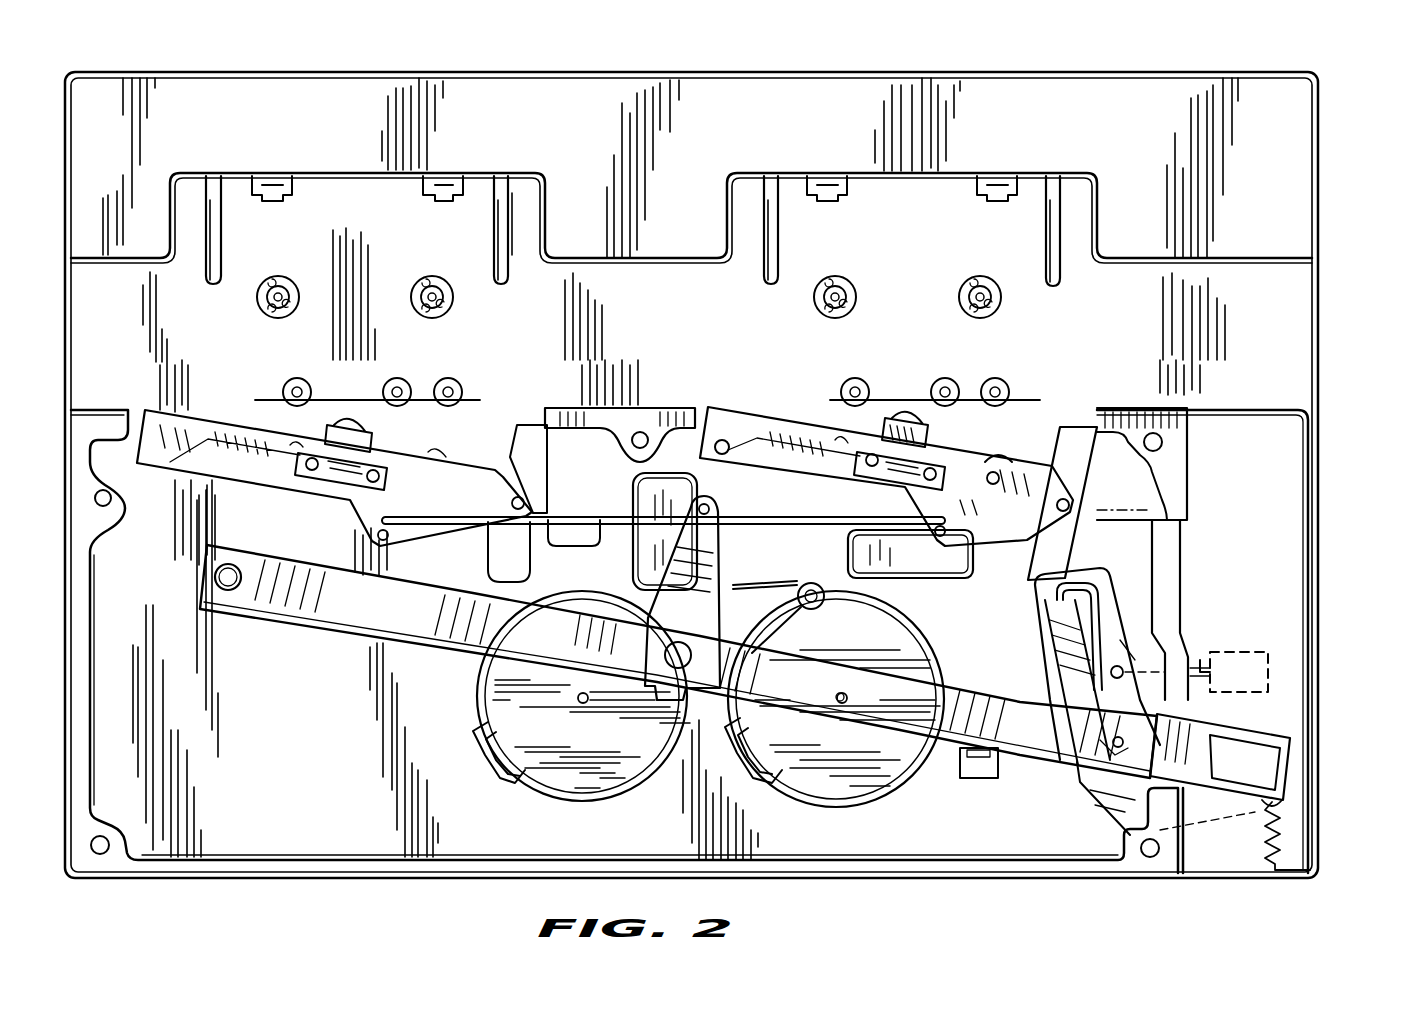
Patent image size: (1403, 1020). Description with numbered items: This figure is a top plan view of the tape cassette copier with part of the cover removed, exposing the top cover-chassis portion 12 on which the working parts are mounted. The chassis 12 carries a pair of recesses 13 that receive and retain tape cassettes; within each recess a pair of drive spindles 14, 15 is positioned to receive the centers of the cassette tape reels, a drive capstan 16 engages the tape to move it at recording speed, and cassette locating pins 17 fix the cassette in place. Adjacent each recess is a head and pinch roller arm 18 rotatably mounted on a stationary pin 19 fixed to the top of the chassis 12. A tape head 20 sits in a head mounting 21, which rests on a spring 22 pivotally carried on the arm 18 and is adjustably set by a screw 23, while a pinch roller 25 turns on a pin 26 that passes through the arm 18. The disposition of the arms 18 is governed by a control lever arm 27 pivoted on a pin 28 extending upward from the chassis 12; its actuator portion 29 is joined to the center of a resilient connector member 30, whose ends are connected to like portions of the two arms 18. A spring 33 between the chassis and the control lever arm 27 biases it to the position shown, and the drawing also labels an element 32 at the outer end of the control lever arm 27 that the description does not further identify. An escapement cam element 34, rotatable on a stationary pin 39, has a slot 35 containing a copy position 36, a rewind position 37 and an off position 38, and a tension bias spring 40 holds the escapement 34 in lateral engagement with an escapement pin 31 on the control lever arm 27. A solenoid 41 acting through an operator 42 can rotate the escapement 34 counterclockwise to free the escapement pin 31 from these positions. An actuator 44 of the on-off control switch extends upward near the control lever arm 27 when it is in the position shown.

The top cover-chassis portion 12 is at (1320, 474).
The recess 13 is at (943, 239).
The drive spindle 14 is at (856, 299).
The drive spindle 15 is at (1000, 306).
The drive capstan 16 is at (1006, 387).
The cassette locating pin 17 is at (940, 385).
The head and pinch roller arm 18 is at (982, 530).
The pin 19 is at (724, 466).
The tape head 20 is at (925, 420).
The head mounting 21 is at (937, 478).
The spring 22 is at (855, 462).
The screw 23 is at (905, 487).
The pinch roller 25 is at (1000, 462).
The pin 26 is at (995, 484).
The control lever arm 27 is at (360, 660).
The pin 28 is at (212, 577).
The actuator portion 29 is at (712, 541).
The resilient connector member 30 is at (600, 538).
The escapement pin 31 is at (1122, 760).
The end block 32 is at (1268, 742).
The spring 33 is at (765, 578).
The escapement cam element 34 is at (1145, 590).
The slot 35 is at (1117, 582).
The copy mode position 36 is at (1055, 597).
The rewind mode position 37 is at (1093, 697).
The off position 38 is at (1128, 785).
The pin 39 is at (1155, 858).
The tension bias spring 40 is at (1290, 832).
The solenoid 41 is at (1272, 652).
The operator 42 is at (1200, 667).
The actuator 44 is at (976, 762).